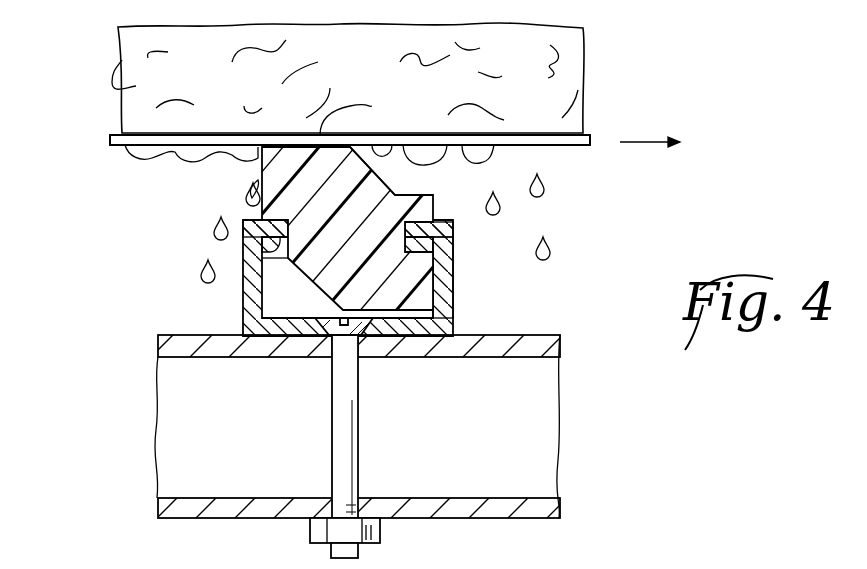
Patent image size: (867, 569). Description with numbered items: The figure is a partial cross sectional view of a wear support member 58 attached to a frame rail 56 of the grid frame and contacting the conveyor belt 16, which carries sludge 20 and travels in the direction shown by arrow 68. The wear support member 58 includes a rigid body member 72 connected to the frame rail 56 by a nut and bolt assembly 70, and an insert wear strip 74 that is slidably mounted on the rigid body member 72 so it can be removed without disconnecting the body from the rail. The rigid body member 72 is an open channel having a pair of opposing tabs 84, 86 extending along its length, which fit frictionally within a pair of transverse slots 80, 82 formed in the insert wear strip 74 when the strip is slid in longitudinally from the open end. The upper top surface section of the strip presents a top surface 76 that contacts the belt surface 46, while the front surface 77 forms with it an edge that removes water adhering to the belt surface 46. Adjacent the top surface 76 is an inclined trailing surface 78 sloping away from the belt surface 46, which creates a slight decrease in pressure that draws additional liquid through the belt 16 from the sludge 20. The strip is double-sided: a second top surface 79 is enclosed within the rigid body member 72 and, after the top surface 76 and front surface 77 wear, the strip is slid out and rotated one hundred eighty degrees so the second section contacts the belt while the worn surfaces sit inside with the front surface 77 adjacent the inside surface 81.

The conveyor belt 16 is at (590, 134).
The sludge 20 is at (137, 78).
The belt surface 46 is at (563, 150).
The frame rail 56 is at (392, 426).
The wear support member 58 is at (357, 272).
The arrow 68 is at (645, 143).
The nut and bolt assembly 70 is at (415, 434).
The rigid body member 72 is at (452, 323).
The insert wear strip 74 is at (433, 208).
The top surface 76 is at (356, 206).
The front surface 77 is at (252, 197).
The trailing surface 78 is at (371, 168).
The top surface 79 is at (411, 357).
The transverse slot 80 is at (433, 257).
The inside surface 81 is at (452, 278).
The transverse slot 82 is at (262, 249).
The tab 84 is at (450, 230).
The tab 86 is at (243, 228).